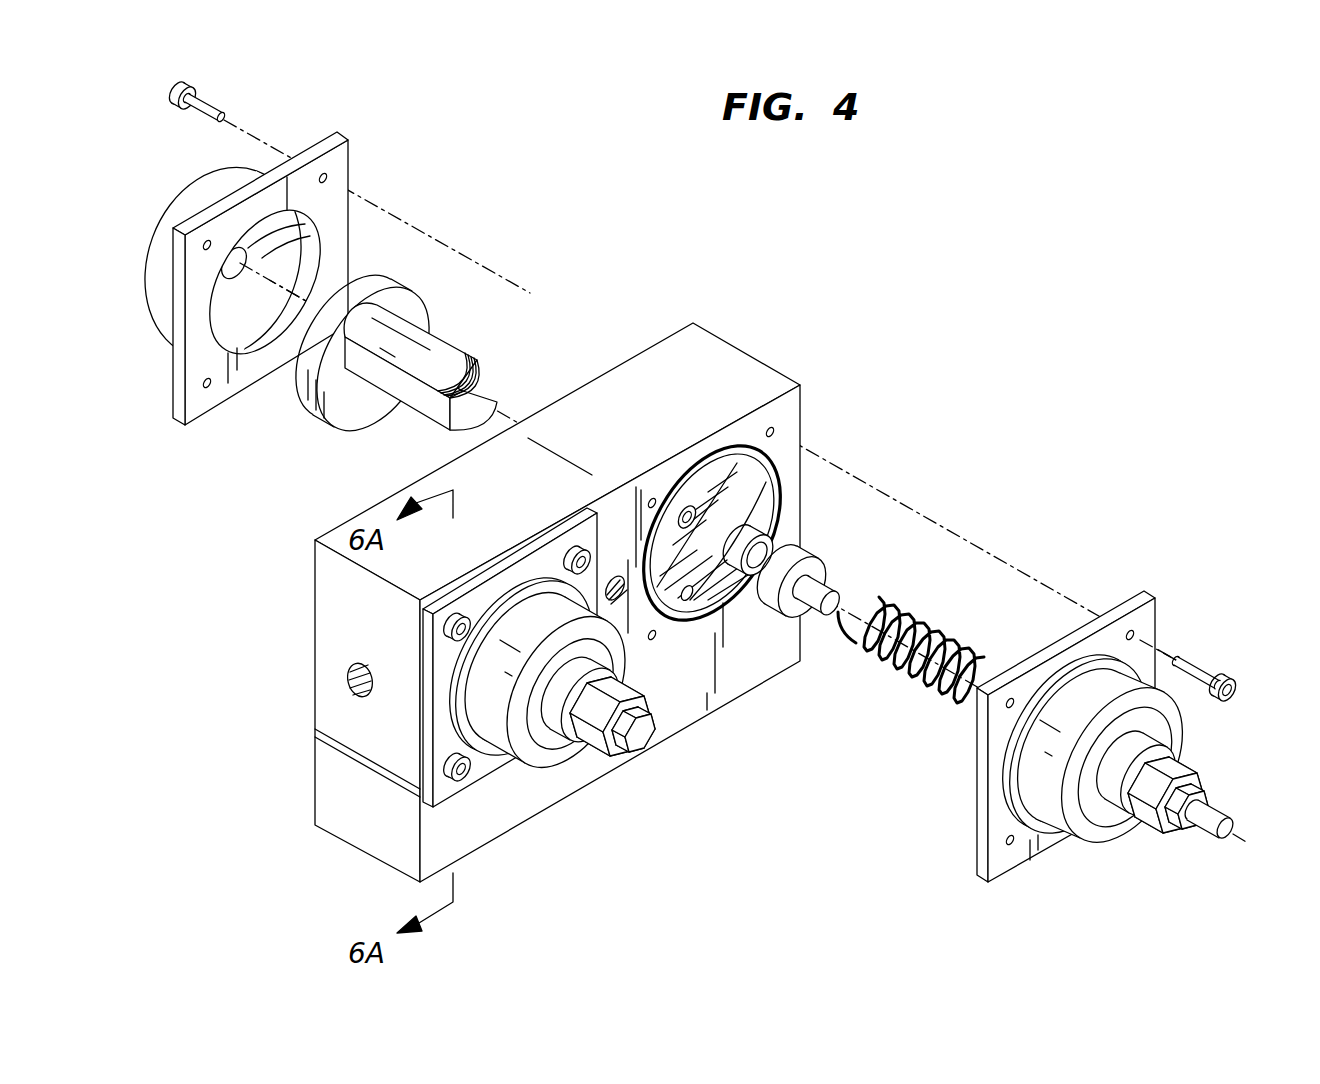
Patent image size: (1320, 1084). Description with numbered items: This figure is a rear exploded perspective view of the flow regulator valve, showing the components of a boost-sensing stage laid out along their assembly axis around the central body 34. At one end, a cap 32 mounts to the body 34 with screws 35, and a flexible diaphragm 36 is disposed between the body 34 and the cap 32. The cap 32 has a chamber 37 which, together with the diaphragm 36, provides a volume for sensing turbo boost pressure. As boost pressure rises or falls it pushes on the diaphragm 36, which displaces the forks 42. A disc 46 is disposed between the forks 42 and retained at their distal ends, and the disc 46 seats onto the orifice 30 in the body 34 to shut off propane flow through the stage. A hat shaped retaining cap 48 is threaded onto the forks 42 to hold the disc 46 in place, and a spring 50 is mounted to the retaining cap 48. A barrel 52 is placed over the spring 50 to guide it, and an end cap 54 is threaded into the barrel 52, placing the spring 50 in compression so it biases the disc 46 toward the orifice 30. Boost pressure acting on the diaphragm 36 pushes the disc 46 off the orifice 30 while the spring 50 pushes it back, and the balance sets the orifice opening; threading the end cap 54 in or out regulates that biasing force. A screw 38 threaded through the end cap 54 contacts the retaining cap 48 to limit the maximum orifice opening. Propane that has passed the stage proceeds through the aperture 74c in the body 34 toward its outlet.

The orifice 30 is at (745, 482).
The cap 32 is at (205, 190).
The body 34 is at (590, 594).
The screws 35 is at (218, 97).
The flexible diaphragm 36 is at (405, 273).
The chamber 37 is at (305, 249).
The screw 38 is at (1200, 836).
The forks 42 is at (440, 338).
The disc 46 is at (765, 545).
The hat shaped retaining cap 48 is at (815, 552).
The spring 50 is at (928, 633).
The barrel 52 is at (1077, 842).
The end cap 54 is at (1160, 853).
The aperture 74c is at (687, 602).